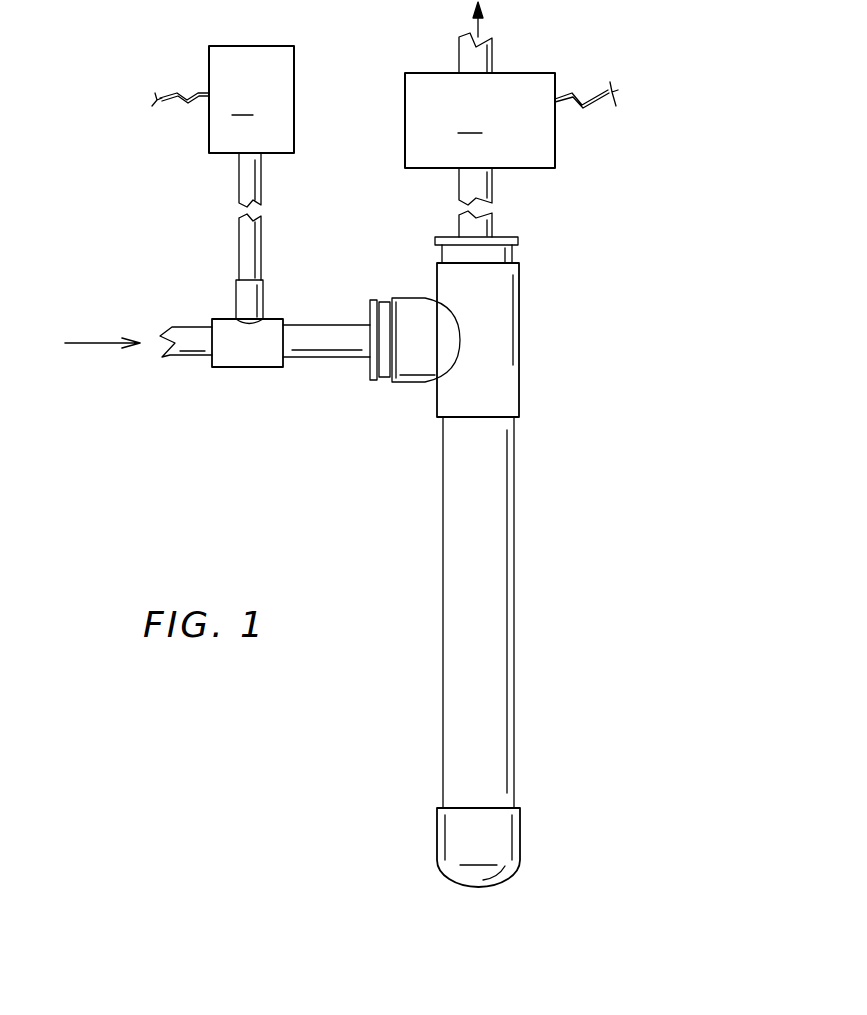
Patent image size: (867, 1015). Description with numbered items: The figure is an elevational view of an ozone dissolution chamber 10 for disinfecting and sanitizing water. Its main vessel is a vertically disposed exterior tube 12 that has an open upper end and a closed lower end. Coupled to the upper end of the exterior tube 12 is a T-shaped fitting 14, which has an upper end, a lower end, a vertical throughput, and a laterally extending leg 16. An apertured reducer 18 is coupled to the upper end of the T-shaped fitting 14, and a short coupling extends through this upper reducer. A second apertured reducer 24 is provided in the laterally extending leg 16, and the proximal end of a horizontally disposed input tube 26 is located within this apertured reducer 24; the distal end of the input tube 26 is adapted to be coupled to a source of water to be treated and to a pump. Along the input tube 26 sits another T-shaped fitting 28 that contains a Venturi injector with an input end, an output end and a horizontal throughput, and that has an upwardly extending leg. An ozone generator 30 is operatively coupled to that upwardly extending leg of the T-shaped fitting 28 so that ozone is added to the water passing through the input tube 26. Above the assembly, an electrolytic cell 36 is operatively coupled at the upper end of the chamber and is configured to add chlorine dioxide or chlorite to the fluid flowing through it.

The dissolution chamber 10 is at (634, 324).
The exterior tube 12 is at (514, 693).
The T-shaped fitting 14 is at (513, 378).
The laterally extending leg 16 is at (420, 358).
The apertured reducer 18 is at (512, 250).
The apertured reducer 24 is at (366, 372).
The input tube 26 is at (328, 325).
The T-shaped fitting 28 is at (250, 368).
The ozone generator 30 is at (223, 163).
The electrolytic cell 36 is at (511, 119).